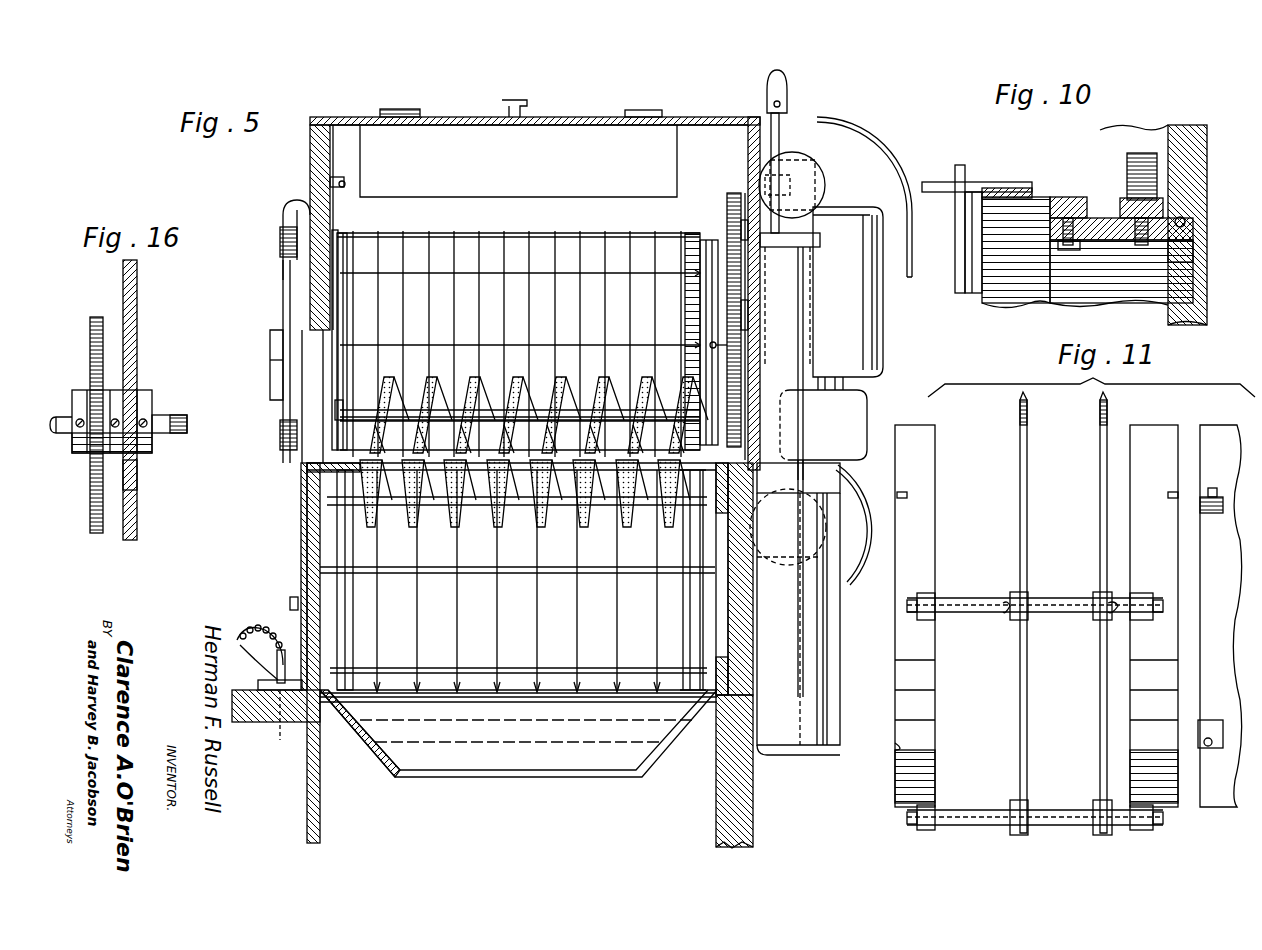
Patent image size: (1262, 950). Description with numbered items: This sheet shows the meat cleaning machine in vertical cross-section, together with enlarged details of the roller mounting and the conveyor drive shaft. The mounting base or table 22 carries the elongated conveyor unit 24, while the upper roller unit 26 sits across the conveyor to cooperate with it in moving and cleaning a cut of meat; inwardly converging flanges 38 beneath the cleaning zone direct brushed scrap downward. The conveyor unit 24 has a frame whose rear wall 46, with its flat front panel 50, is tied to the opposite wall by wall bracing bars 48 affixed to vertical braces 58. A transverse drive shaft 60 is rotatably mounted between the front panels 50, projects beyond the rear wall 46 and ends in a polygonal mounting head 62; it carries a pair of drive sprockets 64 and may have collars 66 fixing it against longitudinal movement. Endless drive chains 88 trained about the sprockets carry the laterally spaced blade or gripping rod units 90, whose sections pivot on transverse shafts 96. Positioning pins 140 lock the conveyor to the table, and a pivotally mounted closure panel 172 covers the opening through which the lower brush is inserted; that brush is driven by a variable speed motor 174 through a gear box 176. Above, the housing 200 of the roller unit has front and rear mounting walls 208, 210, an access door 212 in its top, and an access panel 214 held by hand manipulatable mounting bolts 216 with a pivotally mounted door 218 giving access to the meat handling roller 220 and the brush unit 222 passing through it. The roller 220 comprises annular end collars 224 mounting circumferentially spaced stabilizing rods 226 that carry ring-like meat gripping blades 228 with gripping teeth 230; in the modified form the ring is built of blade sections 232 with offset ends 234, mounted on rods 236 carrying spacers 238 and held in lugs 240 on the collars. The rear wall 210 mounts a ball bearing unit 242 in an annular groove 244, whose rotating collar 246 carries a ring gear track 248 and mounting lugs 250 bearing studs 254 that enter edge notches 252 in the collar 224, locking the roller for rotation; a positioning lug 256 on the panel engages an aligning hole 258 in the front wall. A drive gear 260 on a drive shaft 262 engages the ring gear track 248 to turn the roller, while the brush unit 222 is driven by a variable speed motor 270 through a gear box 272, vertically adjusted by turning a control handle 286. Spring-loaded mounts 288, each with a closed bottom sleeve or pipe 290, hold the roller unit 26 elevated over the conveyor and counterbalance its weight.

In FIG. 5, the mounting base or table 22 is at (300, 775).
In FIG. 5, the conveyor unit 24 is at (270, 543).
In FIG. 5, the upper roller unit 26 is at (268, 230).
In FIG. 5, the inwardly converging flanges 38 is at (522, 755).
In FIG. 16, the rear wall 46 is at (141, 321).
In FIG. 5, the wall bracing bars 48 is at (474, 572).
In FIG. 16, the front panel 50 is at (134, 505).
In FIG. 5, the vertical braces 58 is at (718, 634).
In FIG. 16, the drive shaft 60 is at (60, 435).
In FIG. 16, the polygonal mounting head 62 is at (168, 415).
In FIG. 16, the drive sprockets 64 is at (93, 500).
In FIG. 16, the collars 66 is at (78, 405).
In FIG. 5, the drive chains 88 is at (683, 596).
In FIG. 5, the blade or gripping rod units 90 is at (492, 687).
In FIG. 5, the shaft 96 is at (435, 670).
In FIG. 5, the positioning pins 140 is at (261, 673).
In FIG. 5, the closure panel 172 is at (302, 570).
In FIG. 5, the variable speed motor 174 is at (853, 550).
In FIG. 5, the gear box 176 is at (833, 543).
In FIG. 5, the housing 200 is at (720, 92).
In FIG. 5, the front mounting wall 208 is at (328, 168).
In FIG. 5, the rear mounting wall 210 is at (750, 148).
In FIG. 10, the rear mounting wall 210 is at (1207, 136).
In FIG. 5, the access door 212 is at (441, 116).
In FIG. 5, the access panel 214 is at (296, 264).
In FIG. 5, the mounting bolts 216 is at (280, 440).
In FIG. 5, the pivotally mounted door 218 is at (278, 393).
In FIG. 5, the meat handling roller 220 is at (597, 230).
In FIG. 5, the brush unit 222 is at (572, 376).
In FIG. 5, the annular end collars 224 is at (690, 316).
In FIG. 10, the annular end collars 224 is at (1030, 186).
In FIG. 11, the annular end collars 224 is at (915, 707).
In FIG. 10, the stabilizing rods 226 is at (936, 180).
In FIG. 10, the meat gripping blades 228 is at (966, 196).
In FIG. 10, the meat gripping teeth 230 is at (960, 170).
In FIG. 11, the meat gripping teeth 230 is at (1080, 712).
In FIG. 11, the blade sections 232 is at (1019, 683).
In FIG. 11, the offset end 234 is at (1010, 598).
In FIG. 11, the rods 236 is at (1003, 613).
In FIG. 11, the spacers 238 is at (1065, 597).
In FIG. 11, the lugs 240 is at (930, 588).
In FIG. 5, the ball bearing unit 242 is at (334, 240).
In FIG. 10, the ball bearing unit 242 is at (1198, 228).
In FIG. 10, the annular groove 244 is at (1195, 262).
In FIG. 10, the rotating collar 246 is at (1073, 295).
In FIG. 5, the ring gear track 248 is at (745, 315).
In FIG. 10, the ring gear track 248 is at (1200, 216).
In FIG. 10, the mounting lugs 250 is at (1052, 248).
In FIG. 11, the mounting lugs 250 is at (1218, 513).
In FIG. 11, the edge notches 252 is at (907, 494).
In FIG. 5, the studs 254 is at (718, 345).
In FIG. 10, the studs 254 is at (1066, 197).
In FIG. 11, the studs 254 is at (1213, 488).
In FIG. 5, the positioning lug 256 is at (348, 186).
In FIG. 5, the aligning hole 258 is at (316, 184).
In FIG. 5, the drive gear 260 is at (736, 200).
In FIG. 10, the drive gear 260 is at (1130, 176).
In FIG. 5, the drive shaft 262 is at (744, 228).
In FIG. 5, the variable speed motor 270 is at (866, 338).
In FIG. 5, the gear box 272 is at (848, 415).
In FIG. 5, the control handle 286 is at (787, 100).
In FIG. 5, the spring-loaded mounts 288 is at (828, 667).
In FIG. 5, the sleeve or pipe 290 is at (798, 735).